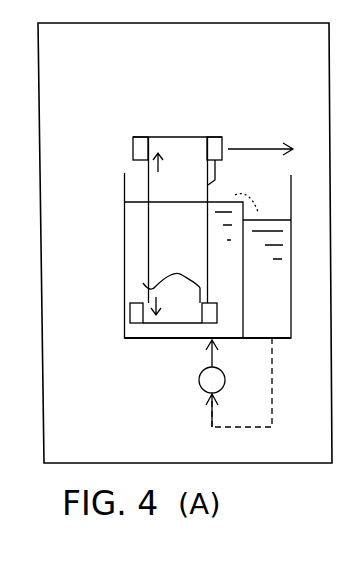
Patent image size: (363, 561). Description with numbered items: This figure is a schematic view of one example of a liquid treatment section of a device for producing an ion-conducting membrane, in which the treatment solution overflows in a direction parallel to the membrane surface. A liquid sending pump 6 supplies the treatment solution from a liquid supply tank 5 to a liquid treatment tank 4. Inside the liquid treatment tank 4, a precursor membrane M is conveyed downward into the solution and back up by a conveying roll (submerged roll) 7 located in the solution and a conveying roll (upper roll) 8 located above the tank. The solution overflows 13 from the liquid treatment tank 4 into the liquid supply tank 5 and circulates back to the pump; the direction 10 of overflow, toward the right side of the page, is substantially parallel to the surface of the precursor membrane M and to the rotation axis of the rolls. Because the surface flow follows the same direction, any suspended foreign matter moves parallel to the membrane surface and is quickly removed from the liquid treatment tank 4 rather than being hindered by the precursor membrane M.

The liquid treatment tank 4 is at (137, 268).
The liquid supply tank 5 is at (244, 367).
The liquid sending pump 6 is at (199, 382).
The conveying roll (submerged roll) 7 is at (137, 325).
The conveying roll (upper roll) 8 is at (133, 148).
The direction of overflow 10 is at (257, 148).
The overflow 13 is at (252, 193).
The precursor membrane M is at (188, 135).